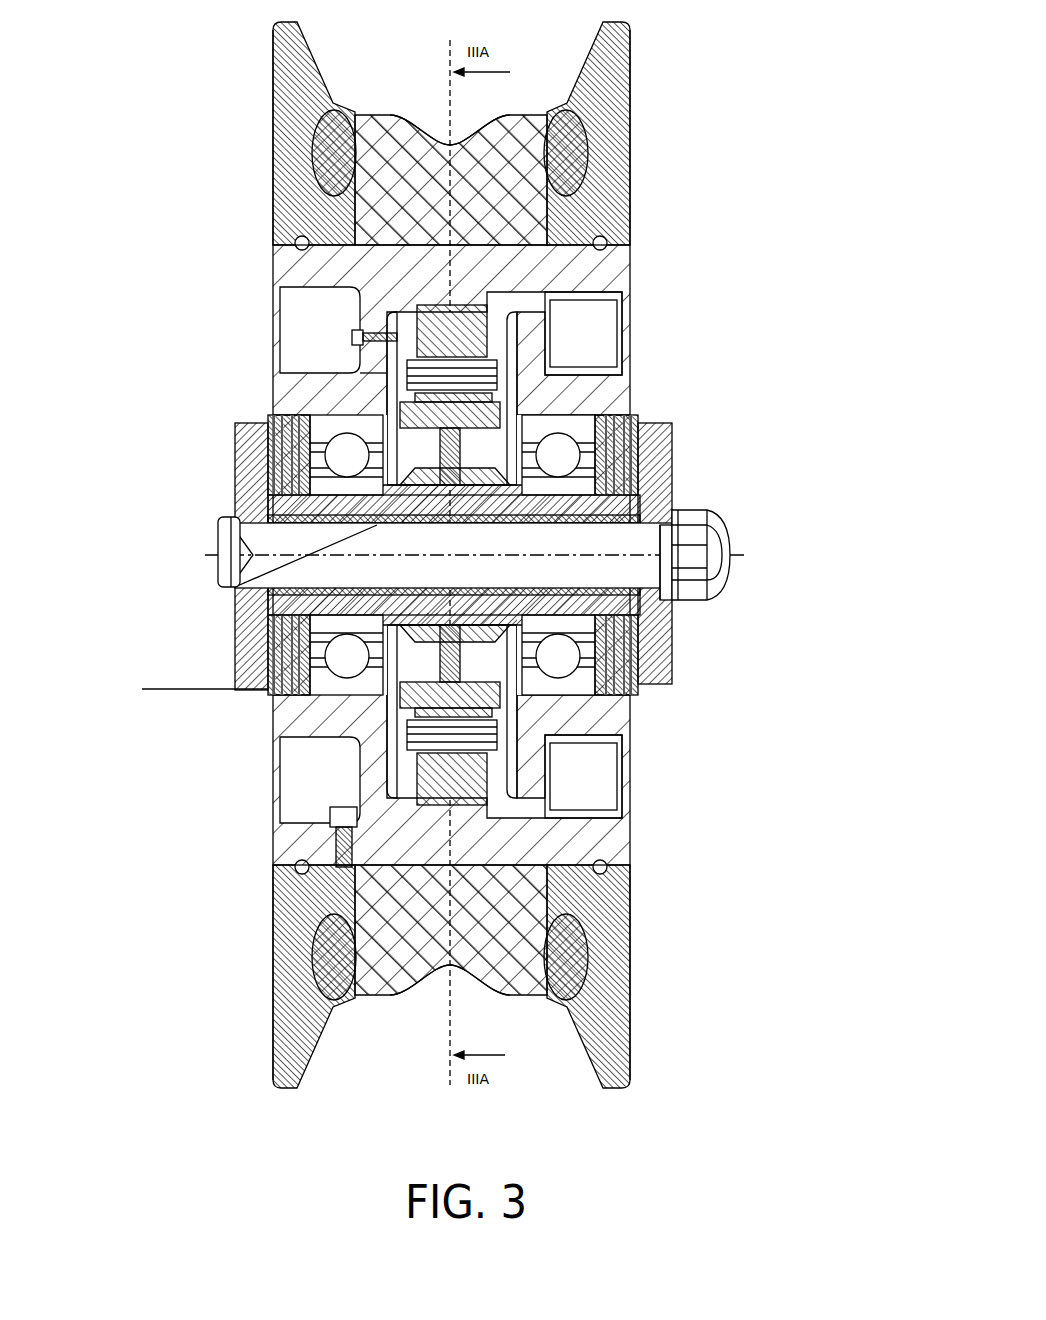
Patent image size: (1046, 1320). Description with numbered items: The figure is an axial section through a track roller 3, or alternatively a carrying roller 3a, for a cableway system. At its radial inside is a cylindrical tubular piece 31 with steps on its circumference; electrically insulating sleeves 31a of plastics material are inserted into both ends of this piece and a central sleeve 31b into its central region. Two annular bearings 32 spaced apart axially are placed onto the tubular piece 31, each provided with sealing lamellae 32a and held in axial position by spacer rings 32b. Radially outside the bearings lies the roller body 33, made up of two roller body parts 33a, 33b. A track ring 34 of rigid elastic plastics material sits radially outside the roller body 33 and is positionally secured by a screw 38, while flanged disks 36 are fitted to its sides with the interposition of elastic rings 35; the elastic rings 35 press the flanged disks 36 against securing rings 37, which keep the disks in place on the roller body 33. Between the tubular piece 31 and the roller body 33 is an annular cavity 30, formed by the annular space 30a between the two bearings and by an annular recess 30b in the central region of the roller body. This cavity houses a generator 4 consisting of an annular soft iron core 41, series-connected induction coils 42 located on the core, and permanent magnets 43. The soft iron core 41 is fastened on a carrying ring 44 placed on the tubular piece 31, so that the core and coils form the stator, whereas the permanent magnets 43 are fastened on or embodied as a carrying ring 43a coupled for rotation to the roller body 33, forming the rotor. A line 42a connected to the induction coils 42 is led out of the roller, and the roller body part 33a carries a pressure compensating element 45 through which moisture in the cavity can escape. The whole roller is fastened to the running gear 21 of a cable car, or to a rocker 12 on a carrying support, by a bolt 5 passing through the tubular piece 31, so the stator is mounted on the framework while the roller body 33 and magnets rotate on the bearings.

The track roller 3 is at (258, 950).
The carrying roller 3a is at (450, 555).
The generator 4 is at (635, 348).
The bolt 5 is at (646, 563).
The rocker 12 is at (672, 648).
The running gear 21 is at (232, 653).
The annular cavity 30 is at (635, 368).
The annular space 30a is at (233, 450).
The annular recess 30b is at (290, 322).
The cylindrical tubular piece 31 is at (640, 501).
The electrically insulating sleeves 31a is at (724, 526).
The central sleeve 31b is at (232, 577).
The annular bearings 32 is at (232, 463).
The sealing lamellae 32a is at (232, 484).
The spacer rings 32b is at (232, 503).
The roller body 33 is at (635, 268).
The roller body part 33a is at (325, 405).
The roller body part 33b is at (635, 402).
The track ring 34 is at (368, 114).
The elastic rings 35 is at (273, 153).
The flanged disks 36 is at (273, 85).
The securing rings 37 is at (290, 241).
The screw 38 is at (330, 847).
The soft iron core 41 is at (560, 760).
The induction coils 42 is at (500, 378).
The line 42a is at (179, 691).
The permanent magnets 43 is at (635, 324).
The carrying ring 43a is at (635, 302).
The carrying ring 44 is at (615, 438).
The pressure compensating element 45 is at (290, 348).